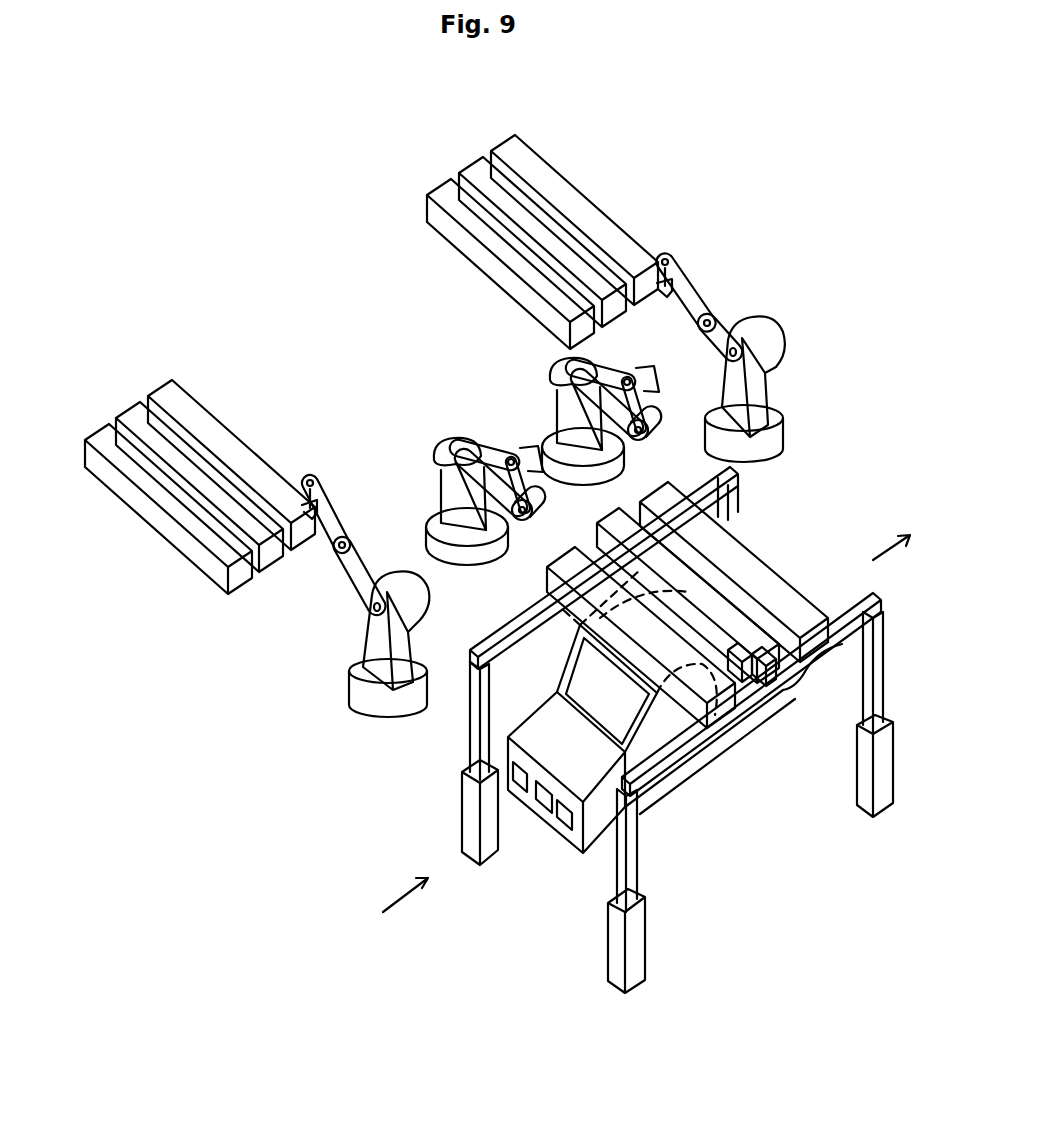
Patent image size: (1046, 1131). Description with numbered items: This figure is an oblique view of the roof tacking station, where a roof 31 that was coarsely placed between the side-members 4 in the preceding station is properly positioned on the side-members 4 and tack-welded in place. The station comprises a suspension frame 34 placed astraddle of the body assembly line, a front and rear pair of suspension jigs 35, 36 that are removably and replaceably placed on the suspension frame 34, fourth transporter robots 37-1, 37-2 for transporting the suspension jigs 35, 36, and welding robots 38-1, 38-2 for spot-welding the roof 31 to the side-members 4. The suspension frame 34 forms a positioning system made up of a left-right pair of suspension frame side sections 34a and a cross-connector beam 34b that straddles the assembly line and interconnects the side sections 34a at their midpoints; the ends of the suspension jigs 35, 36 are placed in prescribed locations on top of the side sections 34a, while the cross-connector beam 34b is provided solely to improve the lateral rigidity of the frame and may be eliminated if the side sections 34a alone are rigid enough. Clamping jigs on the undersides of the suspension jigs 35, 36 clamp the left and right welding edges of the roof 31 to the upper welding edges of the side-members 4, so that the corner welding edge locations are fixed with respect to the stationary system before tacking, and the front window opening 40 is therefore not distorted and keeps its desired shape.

The side-members 4 is at (713, 755).
The roof 31 is at (750, 541).
The suspension frame 34 is at (594, 953).
The suspension frame side sections 34a is at (633, 865).
The cross-connector beam 34b is at (758, 677).
The suspension jig 35 is at (582, 203).
The suspension jig 36 is at (208, 422).
The fourth transporter robot 37-1 is at (762, 392).
The fourth transporter robot 37-2 is at (370, 633).
The welding robot 38-1 is at (563, 413).
The welding robot 38-2 is at (447, 495).
The front window opening 40 is at (574, 668).